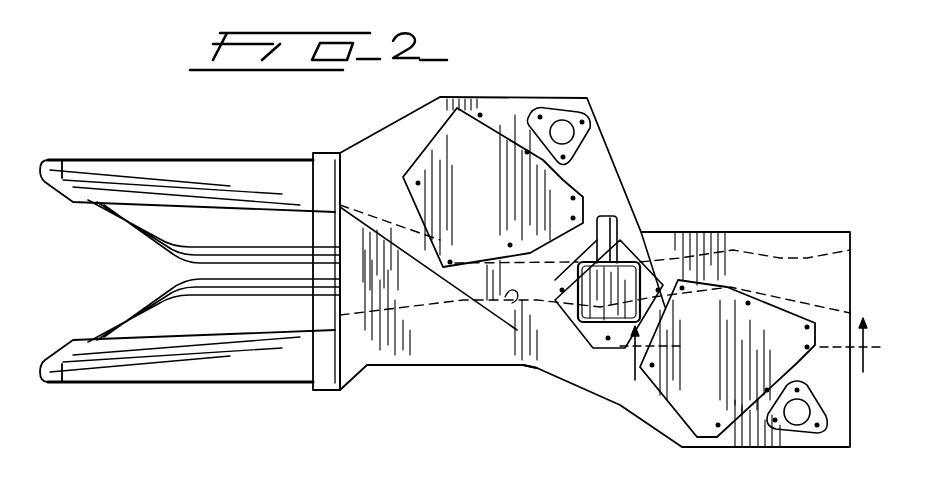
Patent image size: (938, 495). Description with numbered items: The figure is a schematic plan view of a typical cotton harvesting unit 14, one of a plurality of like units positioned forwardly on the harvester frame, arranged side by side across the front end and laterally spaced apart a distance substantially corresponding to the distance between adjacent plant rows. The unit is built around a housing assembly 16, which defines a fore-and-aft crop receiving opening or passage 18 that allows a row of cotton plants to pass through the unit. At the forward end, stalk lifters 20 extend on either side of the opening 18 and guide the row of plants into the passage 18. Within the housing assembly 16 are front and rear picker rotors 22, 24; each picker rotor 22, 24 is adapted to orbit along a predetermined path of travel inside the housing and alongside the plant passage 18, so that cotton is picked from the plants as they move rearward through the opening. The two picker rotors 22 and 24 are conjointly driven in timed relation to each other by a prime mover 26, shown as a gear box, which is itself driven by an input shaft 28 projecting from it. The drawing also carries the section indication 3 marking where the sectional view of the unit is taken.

The cotton harvesting unit 14 is at (417, 413).
The housing assembly 16 is at (596, 165).
The crop receiving opening 18 is at (512, 347).
The stalk lifters 20 is at (80, 204).
The front picker rotor 22 is at (496, 194).
The rear picker rotor 24 is at (720, 376).
The prime mover 26 is at (593, 327).
The input shaft 28 is at (613, 237).
The section line 3- 3 is at (748, 349).